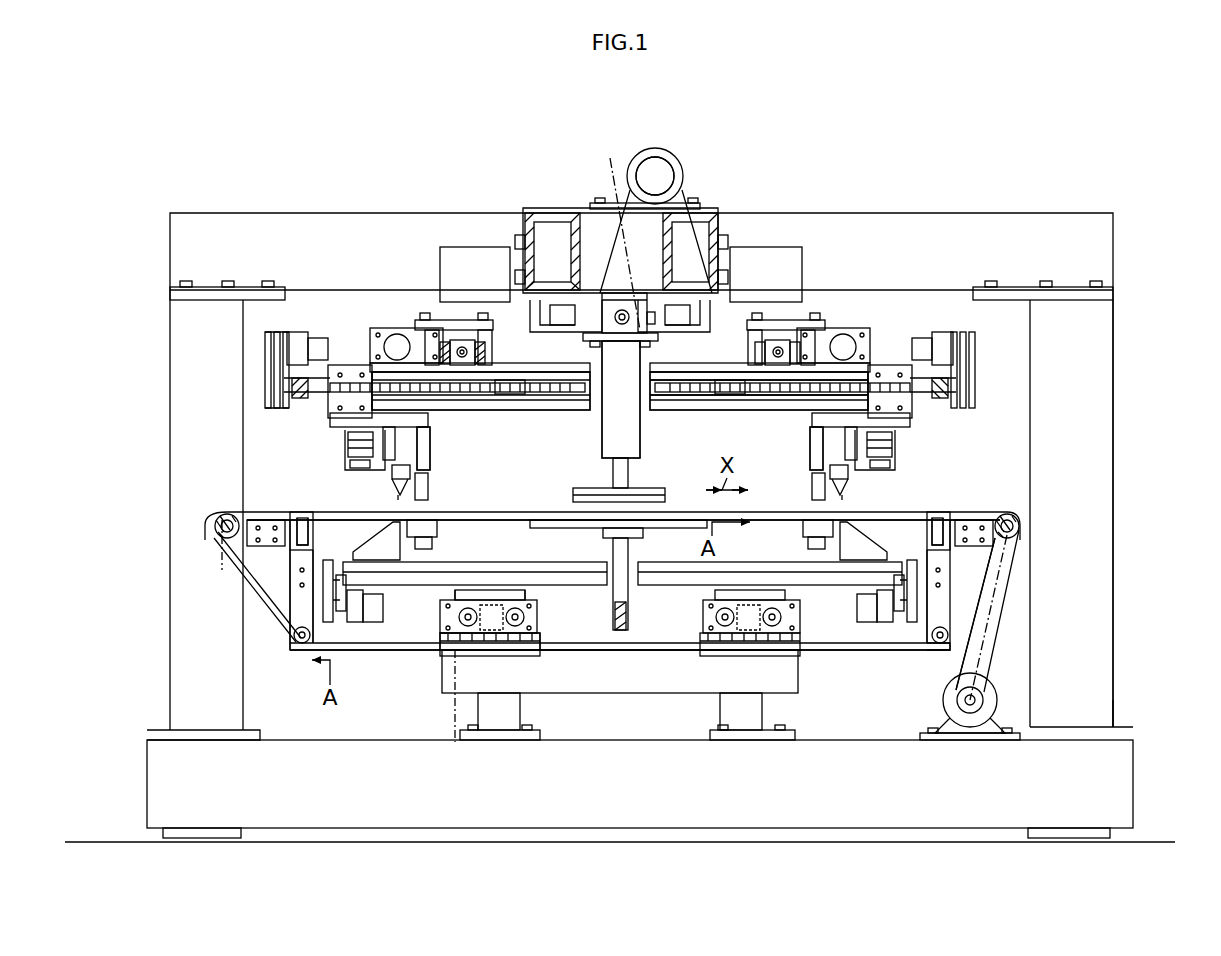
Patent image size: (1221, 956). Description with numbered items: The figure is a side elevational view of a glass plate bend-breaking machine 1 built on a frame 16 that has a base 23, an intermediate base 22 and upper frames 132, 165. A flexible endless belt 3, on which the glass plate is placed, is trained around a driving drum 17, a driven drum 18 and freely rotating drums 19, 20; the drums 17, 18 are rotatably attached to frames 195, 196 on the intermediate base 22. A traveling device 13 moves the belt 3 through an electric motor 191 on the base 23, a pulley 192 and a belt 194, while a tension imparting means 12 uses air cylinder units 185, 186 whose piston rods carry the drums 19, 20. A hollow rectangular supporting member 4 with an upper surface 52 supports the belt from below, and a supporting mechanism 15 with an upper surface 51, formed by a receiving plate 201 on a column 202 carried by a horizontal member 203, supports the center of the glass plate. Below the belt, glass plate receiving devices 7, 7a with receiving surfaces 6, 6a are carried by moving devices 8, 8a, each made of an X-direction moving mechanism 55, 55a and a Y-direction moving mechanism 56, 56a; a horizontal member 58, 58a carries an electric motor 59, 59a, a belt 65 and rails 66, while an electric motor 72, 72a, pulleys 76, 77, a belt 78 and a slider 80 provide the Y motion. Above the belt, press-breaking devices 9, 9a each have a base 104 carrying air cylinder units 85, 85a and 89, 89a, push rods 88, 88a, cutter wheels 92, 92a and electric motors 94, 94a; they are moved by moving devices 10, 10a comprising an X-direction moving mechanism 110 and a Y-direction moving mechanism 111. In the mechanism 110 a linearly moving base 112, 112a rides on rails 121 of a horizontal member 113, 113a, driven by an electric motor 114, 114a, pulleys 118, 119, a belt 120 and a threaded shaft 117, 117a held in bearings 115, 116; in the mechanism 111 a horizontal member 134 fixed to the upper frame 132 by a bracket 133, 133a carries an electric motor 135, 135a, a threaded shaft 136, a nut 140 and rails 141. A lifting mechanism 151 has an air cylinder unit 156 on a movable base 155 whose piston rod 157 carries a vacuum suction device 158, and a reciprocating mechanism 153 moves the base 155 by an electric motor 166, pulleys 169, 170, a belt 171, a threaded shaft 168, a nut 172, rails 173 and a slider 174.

The glass plate bend-breaking machine 1 is at (1117, 418).
The endless belt 3 is at (928, 512).
The supporting member 4 is at (315, 530).
The glass plate receiving surface 6 is at (440, 526).
The glass plate receiving surface 6a is at (815, 528).
The glass plate receiving device 7 is at (440, 548).
The glass plate receiving device 7a is at (800, 546).
The moving device 8 is at (422, 638).
The moving device 8a is at (825, 638).
The press-breaking device 9 is at (433, 462).
The press-breaking device 9a is at (806, 448).
The moving device 10 is at (367, 352).
The moving device 10a is at (852, 300).
The tension imparting means 12 is at (932, 652).
The traveling device 13 is at (1002, 660).
The supporting mechanism 15 is at (611, 592).
The frame 16 is at (1116, 706).
The driving drum 17 is at (1018, 520).
The driven drum 18 is at (215, 540).
The freely rotating drum 19 is at (942, 646).
The freely rotating drum 20 is at (298, 652).
The intermediate base 22 is at (612, 693).
The base 23 is at (1115, 785).
The upper surface 51 is at (530, 512).
The upper surface 52 is at (300, 512).
The X-direction moving mechanism 55 is at (345, 630).
The X-direction moving mechanism 55a is at (900, 630).
The Y-direction moving mechanism 56 is at (440, 624).
The Y-direction moving mechanism 56a is at (703, 614).
The horizontal member 58 is at (490, 562).
The horizontal member 58a is at (670, 562).
The electric motor 59 is at (378, 612).
The electric motor 59a is at (858, 617).
The belt 65 is at (305, 600).
The rails 66 is at (540, 562).
The electric motor 72 is at (520, 656).
The electric motor 72a is at (745, 656).
The pulley 76 is at (522, 598).
The pulley 77 is at (448, 696).
The belt 78 is at (472, 642).
The slider 80 is at (438, 600).
The air cylinder unit 85 is at (431, 447).
The air cylinder unit 85a is at (812, 458).
The push rod 88 is at (430, 488).
The push rod 88a is at (812, 487).
The air cylinder unit 89 is at (356, 468).
The air cylinder unit 89a is at (888, 465).
The cutter wheel 92 is at (398, 492).
The cutter wheel 92a is at (842, 492).
The electric motor 94 is at (352, 440).
The electric motor 94a is at (888, 440).
The base 104 is at (428, 420).
The X-direction moving mechanism 110 is at (283, 415).
The Y-direction moving mechanism 111 is at (520, 368).
The X-direction linearly moving base 112 is at (350, 407).
The X-direction linearly moving base 112a is at (905, 398).
The horizontal member 113 is at (548, 411).
The horizontal member 113a is at (720, 378).
The electric motor 114 is at (298, 345).
The electric motor 114a is at (940, 345).
The bearing 115 is at (294, 386).
The bearing 116 is at (552, 398).
The threaded shaft 117 is at (505, 395).
The threaded shaft 117a is at (720, 400).
The pulley 118 is at (268, 345).
The pulley 119 is at (286, 396).
The belt 120 is at (277, 362).
The rails 121 is at (530, 395).
The upper frame 132 is at (548, 213).
The bracket 133 is at (465, 255).
The bracket 133a is at (805, 266).
The horizontal member 134 is at (445, 352).
The electric motor 135 is at (395, 345).
The electric motor 135a is at (845, 345).
The threaded shaft 136 is at (480, 350).
The nut 140 is at (478, 355).
The rails 141 is at (422, 340).
The lifting mechanism 151 is at (642, 442).
The reciprocating mechanism 153 is at (700, 203).
The movable base 155 is at (670, 338).
The air cylinder unit 156 is at (640, 428).
The piston rod 157 is at (613, 478).
The vacuum suction device 158 is at (640, 490).
The upper frame 165 is at (875, 240).
The electric motor 166 is at (670, 160).
The threaded shaft 168 is at (622, 312).
The pulley 169 is at (655, 176).
The pulley 170 is at (612, 312).
The belt 171 is at (615, 232).
The nut 172 is at (652, 318).
The rails 173 is at (545, 320).
The slider 174 is at (560, 318).
The air cylinder unit 185 is at (950, 637).
The air cylinder unit 186 is at (300, 645).
The electric motor 191 is at (985, 725).
The pulley 192 is at (968, 715).
The belt 194 is at (1005, 580).
The frame 195 is at (975, 518).
The frame 196 is at (230, 514).
The receiving plate 201 is at (578, 528).
The column 202 is at (630, 598).
The horizontal member 203 is at (630, 628).